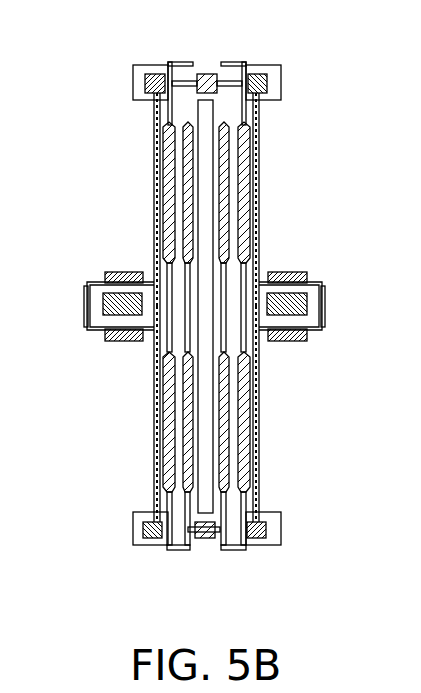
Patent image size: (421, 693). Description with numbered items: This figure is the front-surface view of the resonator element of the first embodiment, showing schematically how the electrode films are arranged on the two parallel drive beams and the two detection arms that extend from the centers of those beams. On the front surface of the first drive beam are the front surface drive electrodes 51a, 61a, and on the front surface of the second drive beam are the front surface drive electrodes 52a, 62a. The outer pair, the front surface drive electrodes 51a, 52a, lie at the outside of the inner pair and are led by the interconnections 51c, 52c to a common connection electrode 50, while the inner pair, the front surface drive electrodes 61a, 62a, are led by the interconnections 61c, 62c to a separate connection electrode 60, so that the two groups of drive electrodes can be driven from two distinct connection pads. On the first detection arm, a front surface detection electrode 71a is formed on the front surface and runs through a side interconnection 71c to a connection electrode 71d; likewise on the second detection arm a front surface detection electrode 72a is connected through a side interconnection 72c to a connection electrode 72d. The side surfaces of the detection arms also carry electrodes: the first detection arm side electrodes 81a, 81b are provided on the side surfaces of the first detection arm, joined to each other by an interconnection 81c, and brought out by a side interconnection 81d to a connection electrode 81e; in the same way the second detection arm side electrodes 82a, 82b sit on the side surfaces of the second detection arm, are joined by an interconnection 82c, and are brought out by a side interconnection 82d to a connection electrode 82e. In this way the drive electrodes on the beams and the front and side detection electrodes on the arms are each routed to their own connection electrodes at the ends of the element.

The connection electrode 50 is at (206, 74).
The connection electrode 60 is at (204, 539).
The front surface drive electrode 51a is at (249, 145).
The interconnection 51c is at (246, 115).
The front surface drive electrode 52a is at (164, 145).
The interconnection 52c is at (167, 115).
The front surface drive electrode 61a is at (229, 173).
The interconnection 61c is at (226, 272).
The front surface drive electrode 62a is at (183, 173).
The interconnection 62c is at (186, 272).
The front surface detection electrode 71a is at (308, 300).
The side interconnection 71c is at (257, 210).
The connection electrode 71d is at (257, 73).
The front surface detection electrode 72a is at (104, 300).
The side interconnection 72c is at (157, 468).
The connection electrode 72d is at (151, 540).
The first detection arm side electrode 81a is at (297, 272).
The first detection arm side electrode 81b is at (295, 339).
The interconnection 81c is at (327, 310).
The side interconnection 81d is at (257, 468).
The connection electrode 81e is at (256, 539).
The second detection arm side electrode 82a is at (115, 272).
The second detection arm side electrode 82b is at (122, 339).
The interconnection 82c is at (86, 310).
The side interconnection 82d is at (157, 210).
The connection electrode 82e is at (155, 73).